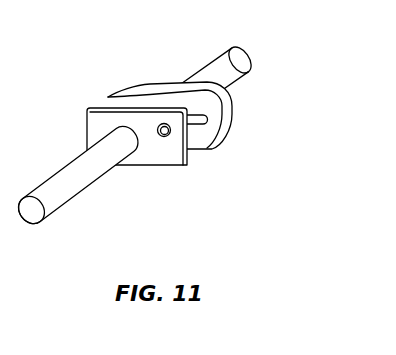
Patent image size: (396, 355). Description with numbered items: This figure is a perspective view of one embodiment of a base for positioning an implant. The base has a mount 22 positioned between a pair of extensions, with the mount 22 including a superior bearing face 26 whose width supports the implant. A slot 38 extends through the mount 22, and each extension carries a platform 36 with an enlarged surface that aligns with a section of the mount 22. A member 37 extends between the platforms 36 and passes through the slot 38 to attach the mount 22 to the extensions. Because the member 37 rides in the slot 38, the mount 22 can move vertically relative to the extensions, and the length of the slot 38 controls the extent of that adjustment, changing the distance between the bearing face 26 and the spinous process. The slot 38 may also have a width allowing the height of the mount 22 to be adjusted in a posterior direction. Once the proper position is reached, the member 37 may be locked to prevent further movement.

The mount 22 is at (142, 79).
The superior bearing face 26 is at (226, 117).
The platform 36 is at (106, 121).
The member 37 is at (163, 137).
The slot 38 is at (198, 124).